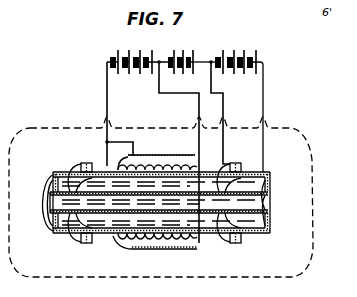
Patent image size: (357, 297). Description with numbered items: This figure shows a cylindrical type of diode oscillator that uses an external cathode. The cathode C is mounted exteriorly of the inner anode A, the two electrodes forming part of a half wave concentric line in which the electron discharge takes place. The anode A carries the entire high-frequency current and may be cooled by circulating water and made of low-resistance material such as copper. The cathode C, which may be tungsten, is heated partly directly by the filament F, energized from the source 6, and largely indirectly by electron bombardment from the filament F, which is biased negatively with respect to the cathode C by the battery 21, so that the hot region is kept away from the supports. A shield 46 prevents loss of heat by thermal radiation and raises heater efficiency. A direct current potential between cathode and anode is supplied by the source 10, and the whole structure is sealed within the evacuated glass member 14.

The source 6 is at (118, 53).
The battery 21 is at (190, 47).
The source 10 is at (237, 53).
The evacuated glass member 14 is at (303, 136).
The shield 46 is at (157, 149).
The anode A is at (112, 197).
The cathode C is at (161, 201).
The filament F is at (191, 152).